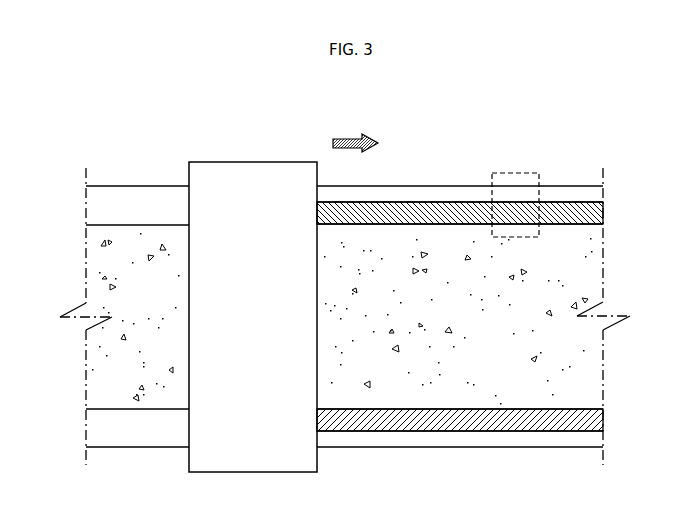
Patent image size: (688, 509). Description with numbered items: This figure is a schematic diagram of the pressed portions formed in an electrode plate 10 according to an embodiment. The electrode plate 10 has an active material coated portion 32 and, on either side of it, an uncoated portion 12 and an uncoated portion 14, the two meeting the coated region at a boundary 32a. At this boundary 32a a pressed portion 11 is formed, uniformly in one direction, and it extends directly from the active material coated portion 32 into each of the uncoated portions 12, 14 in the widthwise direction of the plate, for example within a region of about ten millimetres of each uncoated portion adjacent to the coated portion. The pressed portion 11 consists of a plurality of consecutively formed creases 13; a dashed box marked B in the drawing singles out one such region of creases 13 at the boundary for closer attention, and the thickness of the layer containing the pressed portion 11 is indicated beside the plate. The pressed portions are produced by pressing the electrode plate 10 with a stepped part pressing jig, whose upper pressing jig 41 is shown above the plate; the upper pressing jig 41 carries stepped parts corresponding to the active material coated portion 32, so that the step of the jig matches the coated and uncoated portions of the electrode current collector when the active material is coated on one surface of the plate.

The electrode plate 10 is at (604, 143).
The pressed portion 11 is at (611, 224).
The uncoated portion 12 is at (434, 191).
The crease 13 is at (520, 200).
The uncoated portion 14 is at (395, 444).
The active material coated portion 32 is at (478, 399).
The boundary 32a is at (532, 411).
The upper pressing jig 41 is at (247, 167).
The detail region B is at (516, 172).